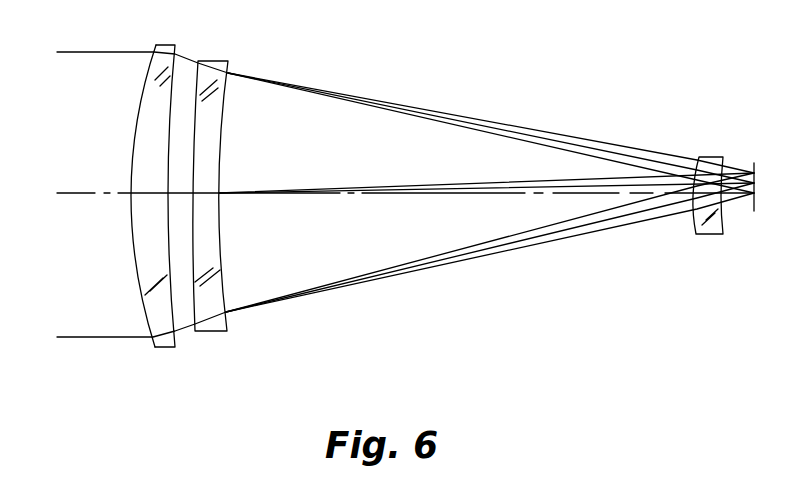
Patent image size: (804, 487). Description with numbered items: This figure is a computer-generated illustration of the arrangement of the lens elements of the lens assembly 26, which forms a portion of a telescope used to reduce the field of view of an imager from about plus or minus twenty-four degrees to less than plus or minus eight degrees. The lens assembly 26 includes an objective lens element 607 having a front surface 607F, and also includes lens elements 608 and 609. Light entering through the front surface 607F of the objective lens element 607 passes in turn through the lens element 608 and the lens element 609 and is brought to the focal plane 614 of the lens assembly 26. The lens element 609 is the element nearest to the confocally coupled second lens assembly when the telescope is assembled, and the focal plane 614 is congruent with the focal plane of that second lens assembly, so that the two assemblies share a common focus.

The lens assembly 26 is at (428, 382).
The objective lens element 607 is at (168, 348).
The front surface 607F is at (146, 87).
The lens element 608 is at (212, 333).
The lens element 609 is at (705, 235).
The focal plane 614 is at (755, 211).